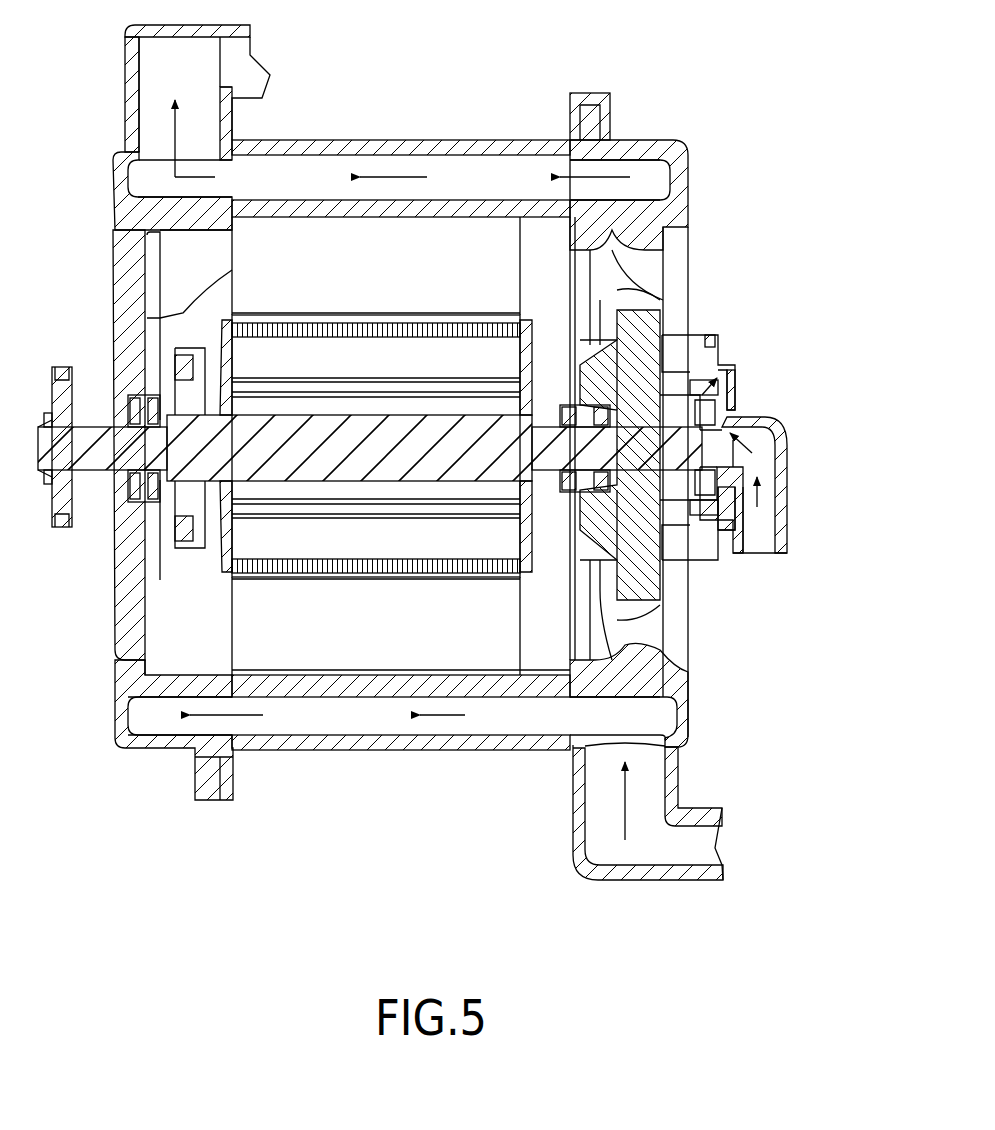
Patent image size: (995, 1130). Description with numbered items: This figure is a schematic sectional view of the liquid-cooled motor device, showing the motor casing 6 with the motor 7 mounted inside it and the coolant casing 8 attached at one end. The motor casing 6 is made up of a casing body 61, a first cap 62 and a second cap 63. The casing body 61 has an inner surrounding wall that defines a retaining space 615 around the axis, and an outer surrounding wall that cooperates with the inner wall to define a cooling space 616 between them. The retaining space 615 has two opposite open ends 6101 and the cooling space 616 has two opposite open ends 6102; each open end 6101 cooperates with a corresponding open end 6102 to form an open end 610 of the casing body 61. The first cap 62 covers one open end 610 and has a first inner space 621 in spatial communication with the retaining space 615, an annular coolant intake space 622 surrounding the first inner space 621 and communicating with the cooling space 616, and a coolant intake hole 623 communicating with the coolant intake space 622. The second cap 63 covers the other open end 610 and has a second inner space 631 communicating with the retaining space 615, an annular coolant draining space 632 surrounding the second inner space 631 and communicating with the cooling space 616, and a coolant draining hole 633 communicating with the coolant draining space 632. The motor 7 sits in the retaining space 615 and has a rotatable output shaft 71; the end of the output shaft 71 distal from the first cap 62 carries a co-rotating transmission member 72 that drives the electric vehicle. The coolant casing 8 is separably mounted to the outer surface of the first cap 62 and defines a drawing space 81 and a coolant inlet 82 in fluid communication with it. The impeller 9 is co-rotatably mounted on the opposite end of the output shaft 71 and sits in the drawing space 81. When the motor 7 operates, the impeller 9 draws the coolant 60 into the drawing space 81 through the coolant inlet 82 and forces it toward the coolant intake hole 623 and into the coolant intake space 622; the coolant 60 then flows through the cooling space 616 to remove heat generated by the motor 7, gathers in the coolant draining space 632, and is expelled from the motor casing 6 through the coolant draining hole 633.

The motor casing 6 is at (458, 68).
The coolant 60 is at (766, 505).
The casing body 61 is at (397, 148).
The open end of the casing body 610 is at (555, 620).
The retaining space 615 is at (345, 655).
The cooling space 616 is at (455, 178).
The open end of the retaining space 6101 is at (200, 300).
The open end of the cooling space 6102 is at (200, 722).
The first cap 62 is at (690, 160).
The first inner space 621 is at (590, 258).
The coolant intake space 622 is at (640, 175).
The coolant intake hole 623 is at (660, 840).
The second cap 63 is at (127, 155).
The second inner space 631 is at (180, 282).
The coolant draining space 632 is at (150, 184).
The coolant draining hole 633 is at (228, 62).
The motor 7 is at (318, 537).
The output shaft 71 is at (102, 447).
The transmission member 72 is at (52, 498).
The coolant casing 8 is at (740, 375).
The drawing space 81 is at (725, 420).
The coolant inlet 82 is at (766, 520).
The impeller 9 is at (720, 420).